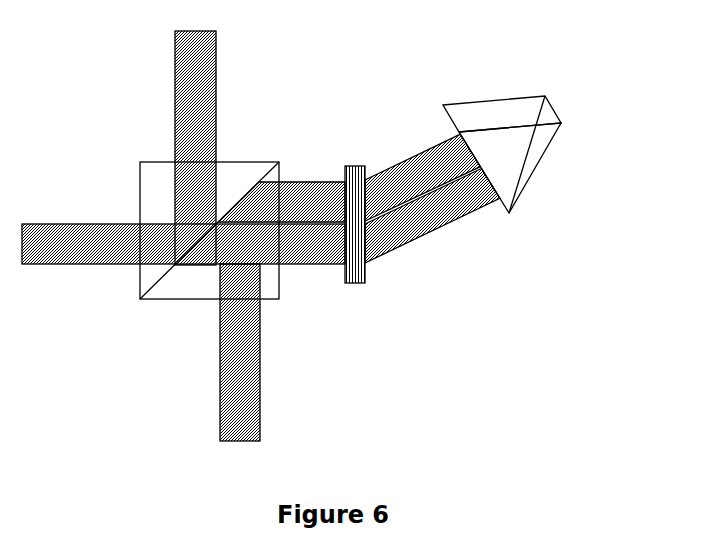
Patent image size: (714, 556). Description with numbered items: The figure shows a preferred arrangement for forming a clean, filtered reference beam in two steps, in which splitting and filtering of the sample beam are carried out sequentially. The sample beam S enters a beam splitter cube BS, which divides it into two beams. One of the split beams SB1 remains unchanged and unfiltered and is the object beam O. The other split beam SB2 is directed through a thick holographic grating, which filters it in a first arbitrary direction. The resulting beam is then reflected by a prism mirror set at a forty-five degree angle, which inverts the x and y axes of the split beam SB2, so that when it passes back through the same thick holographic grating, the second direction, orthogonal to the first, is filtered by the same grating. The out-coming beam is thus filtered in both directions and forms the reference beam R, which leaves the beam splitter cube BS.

The object beam O is at (195, 132).
The sample beam S is at (183, 228).
The reference beam R is at (240, 371).
The first split beam SB1 is at (328, 178).
The second split beam SB2 is at (395, 216).
The beam splitter cube BS is at (209, 250).
The thick holographic grating is at (354, 261).
The prism mirror prism is at (532, 154).